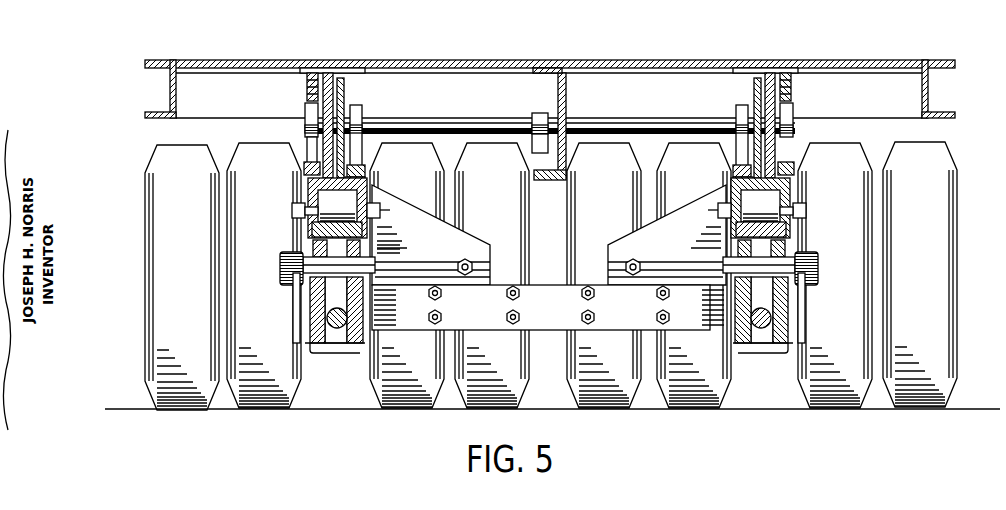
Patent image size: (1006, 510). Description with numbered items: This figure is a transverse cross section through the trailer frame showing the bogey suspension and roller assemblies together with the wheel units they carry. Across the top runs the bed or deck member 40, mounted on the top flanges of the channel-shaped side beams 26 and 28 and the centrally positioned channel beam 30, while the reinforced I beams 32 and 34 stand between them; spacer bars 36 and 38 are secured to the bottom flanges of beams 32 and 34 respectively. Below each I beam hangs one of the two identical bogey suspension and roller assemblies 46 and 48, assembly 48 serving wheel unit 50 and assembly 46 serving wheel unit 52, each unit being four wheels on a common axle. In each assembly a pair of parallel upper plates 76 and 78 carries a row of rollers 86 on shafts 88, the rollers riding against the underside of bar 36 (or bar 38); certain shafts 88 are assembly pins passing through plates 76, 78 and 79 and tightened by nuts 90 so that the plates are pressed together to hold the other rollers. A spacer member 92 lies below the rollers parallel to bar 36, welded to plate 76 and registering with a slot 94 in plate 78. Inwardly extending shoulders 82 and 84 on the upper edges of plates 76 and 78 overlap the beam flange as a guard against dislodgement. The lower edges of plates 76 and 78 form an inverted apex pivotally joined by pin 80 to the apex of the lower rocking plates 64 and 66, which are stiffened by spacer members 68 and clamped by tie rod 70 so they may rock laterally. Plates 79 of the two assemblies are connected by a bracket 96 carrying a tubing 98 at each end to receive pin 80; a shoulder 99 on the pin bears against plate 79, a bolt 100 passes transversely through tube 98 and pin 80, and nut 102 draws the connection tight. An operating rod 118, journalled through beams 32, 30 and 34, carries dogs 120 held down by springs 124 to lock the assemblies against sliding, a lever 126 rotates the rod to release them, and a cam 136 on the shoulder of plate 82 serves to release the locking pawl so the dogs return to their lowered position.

The beam 26 is at (168, 86).
The beam 28 is at (928, 92).
The beam 30 is at (565, 68).
The reinforced I beam 32 is at (352, 68).
The beam 34 is at (738, 67).
The spacer bar 36 is at (308, 198).
The spacer bar 38 is at (792, 192).
The deck member 40 is at (485, 60).
The bogey suspension and roller assembly 46 is at (404, 233).
The bogey suspension and roller assembly 48 is at (710, 227).
The wheel unit 50 is at (958, 216).
The wheel unit 52 is at (136, 216).
The rocking plate 64 is at (320, 345).
The rocking plate 66 is at (352, 345).
The spacer and stiffener member 68 is at (333, 352).
The tie rod 70 is at (335, 318).
The plate 76 is at (313, 243).
The plate 78 is at (358, 182).
The plate 79 is at (378, 326).
The pin 80 is at (295, 285).
The shoulder 82 is at (305, 168).
The shoulder 84 is at (365, 170).
The roller 86 is at (350, 205).
The shaft 88 is at (312, 228).
The nut 90 is at (292, 210).
The spacer member 92 is at (312, 250).
The slot 94 is at (400, 250).
The bracket 96 is at (553, 296).
The tubing 98 is at (475, 258).
The shoulder 99 is at (398, 287).
The bolt 100 is at (628, 265).
The nut 102 is at (283, 272).
The operating rod 118 is at (655, 124).
The dog 120 is at (305, 112).
The spring 124 is at (318, 76).
The lever 126 is at (535, 128).
The cam 136 is at (307, 160).